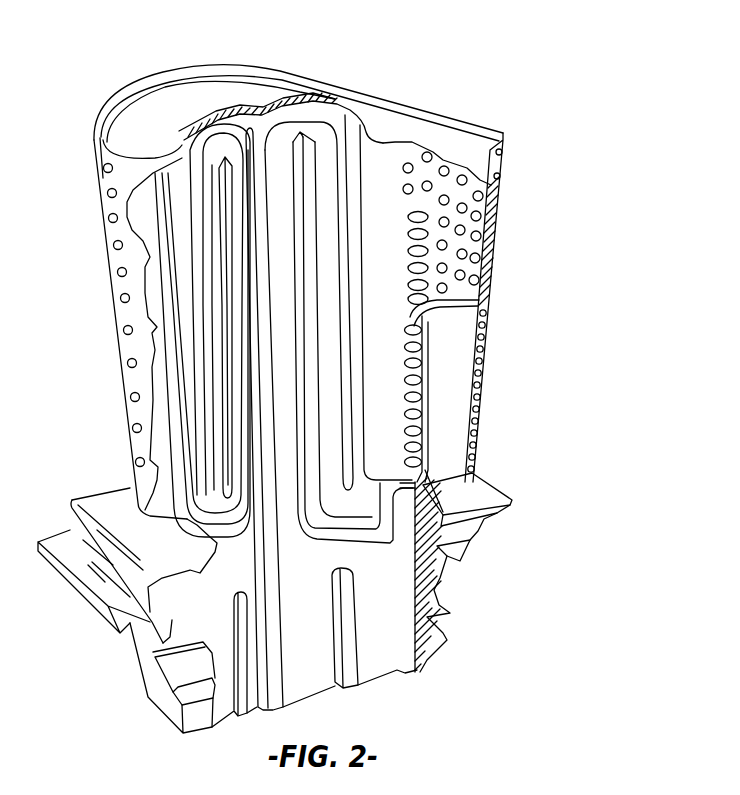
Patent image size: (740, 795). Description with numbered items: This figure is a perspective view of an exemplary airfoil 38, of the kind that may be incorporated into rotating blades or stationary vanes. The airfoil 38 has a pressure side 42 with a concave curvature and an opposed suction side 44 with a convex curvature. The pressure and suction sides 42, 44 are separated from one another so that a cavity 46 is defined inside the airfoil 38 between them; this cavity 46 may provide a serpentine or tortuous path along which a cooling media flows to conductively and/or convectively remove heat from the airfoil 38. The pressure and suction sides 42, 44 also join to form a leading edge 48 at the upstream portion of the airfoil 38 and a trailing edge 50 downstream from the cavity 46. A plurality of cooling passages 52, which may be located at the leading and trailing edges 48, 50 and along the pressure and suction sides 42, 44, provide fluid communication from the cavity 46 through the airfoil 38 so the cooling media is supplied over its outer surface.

The airfoil 38 is at (612, 220).
The pressure side 42 is at (376, 285).
The suction side 44 is at (370, 93).
The cavity 46 is at (188, 303).
The leading edge 48 is at (109, 252).
The trailing edge 50 is at (479, 300).
The cooling passages 52 is at (138, 462).